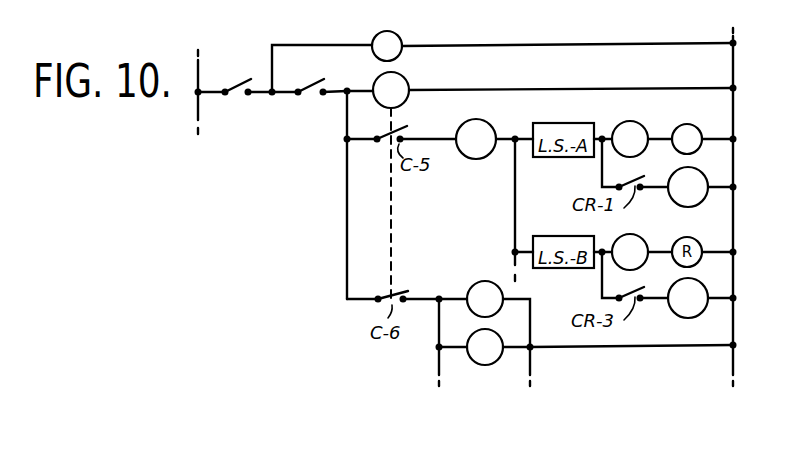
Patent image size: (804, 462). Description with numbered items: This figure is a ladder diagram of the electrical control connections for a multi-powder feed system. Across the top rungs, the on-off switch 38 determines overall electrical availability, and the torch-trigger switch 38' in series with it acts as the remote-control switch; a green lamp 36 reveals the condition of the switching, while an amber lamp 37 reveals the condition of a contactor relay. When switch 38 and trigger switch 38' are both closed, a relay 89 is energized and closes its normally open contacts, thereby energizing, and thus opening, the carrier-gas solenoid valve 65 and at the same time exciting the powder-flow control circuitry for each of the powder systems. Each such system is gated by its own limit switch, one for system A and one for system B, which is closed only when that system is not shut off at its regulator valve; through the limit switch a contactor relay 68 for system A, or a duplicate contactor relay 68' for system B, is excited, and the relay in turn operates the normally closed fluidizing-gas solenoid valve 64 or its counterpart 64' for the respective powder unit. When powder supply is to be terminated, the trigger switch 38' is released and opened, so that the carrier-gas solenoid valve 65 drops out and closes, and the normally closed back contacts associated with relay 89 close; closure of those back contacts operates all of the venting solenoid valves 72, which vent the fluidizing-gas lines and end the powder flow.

The green lamp 36 is at (398, 38).
The on-off switch 38 is at (237, 70).
The torch-trigger switch 38' is at (308, 73).
The relay 89 is at (403, 79).
The carrier-gas solenoid valve 65 is at (476, 139).
The contactor relay 68 is at (638, 128).
The amber lamp 37 is at (701, 117).
The fluidizing-gas solenoid valve 64 is at (688, 187).
The contactor relay 68' is at (641, 242).
The fluidizing-gas solenoid valve 64' is at (688, 298).
The venting solenoid valve 72 is at (485, 323).